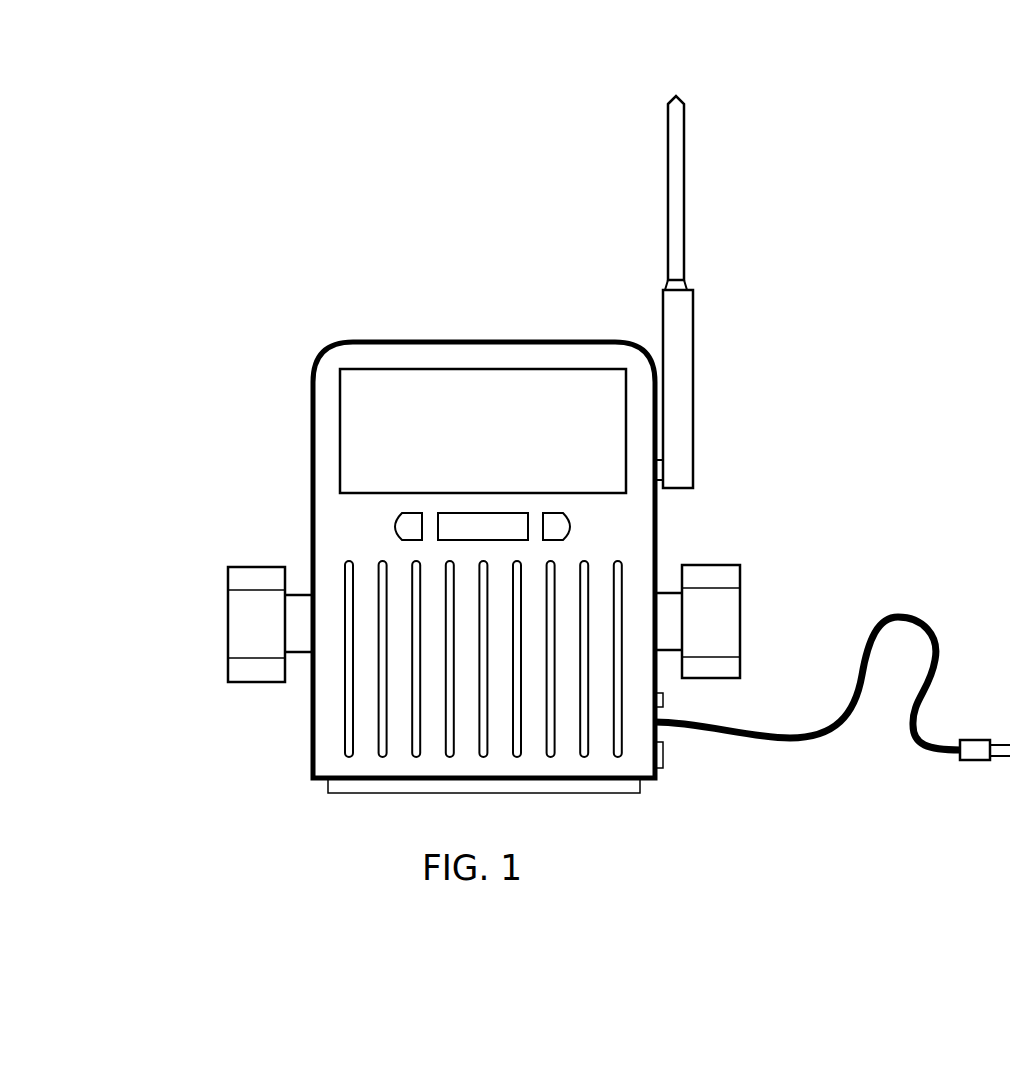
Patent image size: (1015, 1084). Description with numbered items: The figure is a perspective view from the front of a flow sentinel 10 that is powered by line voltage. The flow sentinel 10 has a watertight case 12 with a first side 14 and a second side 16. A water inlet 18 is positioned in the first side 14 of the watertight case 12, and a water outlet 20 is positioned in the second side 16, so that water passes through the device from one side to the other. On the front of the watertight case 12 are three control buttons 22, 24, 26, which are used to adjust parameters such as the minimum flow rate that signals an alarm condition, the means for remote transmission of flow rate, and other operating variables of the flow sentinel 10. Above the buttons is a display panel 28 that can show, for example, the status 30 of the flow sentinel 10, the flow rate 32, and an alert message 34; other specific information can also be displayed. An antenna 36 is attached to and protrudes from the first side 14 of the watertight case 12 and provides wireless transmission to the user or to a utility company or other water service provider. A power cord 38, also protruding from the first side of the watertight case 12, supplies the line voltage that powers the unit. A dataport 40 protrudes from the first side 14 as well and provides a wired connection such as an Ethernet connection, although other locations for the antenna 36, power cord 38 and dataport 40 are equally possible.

The flow sentinel 10 is at (489, 287).
The watertight case 12 is at (328, 386).
The first side 14 is at (665, 700).
The second side 16 is at (345, 724).
The water inlet 18 is at (668, 612).
The water outlet 20 is at (300, 613).
The control button 22 is at (393, 527).
The control button 24 is at (462, 513).
The control button 26 is at (562, 527).
The display panel 28 is at (362, 468).
The status 30 is at (373, 385).
The flow rate 32 is at (566, 385).
The alert message 34 is at (362, 447).
The antenna 36 is at (684, 320).
The power cord 38 is at (975, 740).
The dataport 40 is at (665, 753).